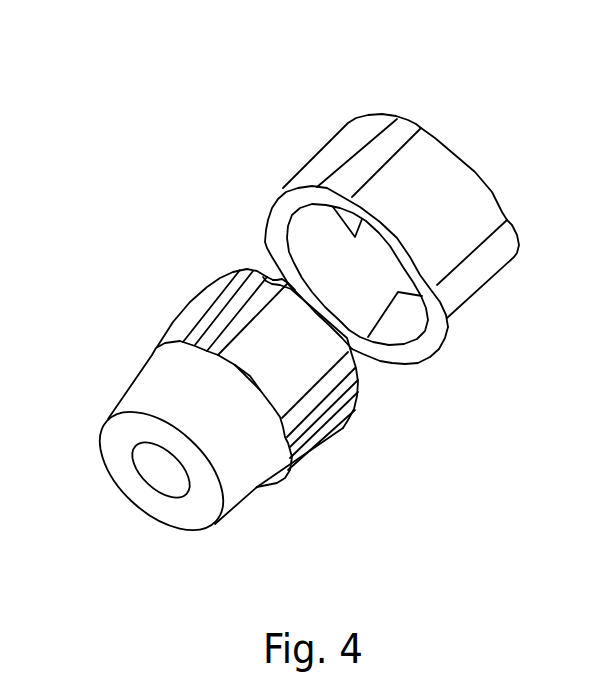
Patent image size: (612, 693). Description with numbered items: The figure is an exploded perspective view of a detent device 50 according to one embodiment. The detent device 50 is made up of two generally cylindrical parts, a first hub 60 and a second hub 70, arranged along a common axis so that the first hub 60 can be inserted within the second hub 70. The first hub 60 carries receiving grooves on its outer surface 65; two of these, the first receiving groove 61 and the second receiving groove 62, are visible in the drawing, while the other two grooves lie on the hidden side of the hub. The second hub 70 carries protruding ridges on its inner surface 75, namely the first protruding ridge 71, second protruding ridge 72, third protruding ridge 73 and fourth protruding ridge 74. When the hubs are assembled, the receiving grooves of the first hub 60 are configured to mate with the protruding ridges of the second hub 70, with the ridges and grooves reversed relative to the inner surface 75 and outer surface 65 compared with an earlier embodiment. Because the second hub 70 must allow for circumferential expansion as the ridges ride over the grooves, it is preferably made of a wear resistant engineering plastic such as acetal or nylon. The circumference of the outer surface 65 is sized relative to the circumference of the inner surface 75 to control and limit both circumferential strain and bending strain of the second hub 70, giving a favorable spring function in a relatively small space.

The detent device 50 is at (203, 130).
The first hub 60 is at (153, 397).
The first receiving groove 61 is at (215, 337).
The second receiving groove 62 is at (308, 418).
The outer surface 65 is at (265, 372).
The second hub 70 is at (447, 223).
The first protruding ridge 71 is at (359, 237).
The second protruding ridge 72 is at (398, 293).
The third protruding ridge 73 is at (387, 330).
The fourth protruding ridge 74 is at (297, 243).
The inner surface 75 is at (340, 257).